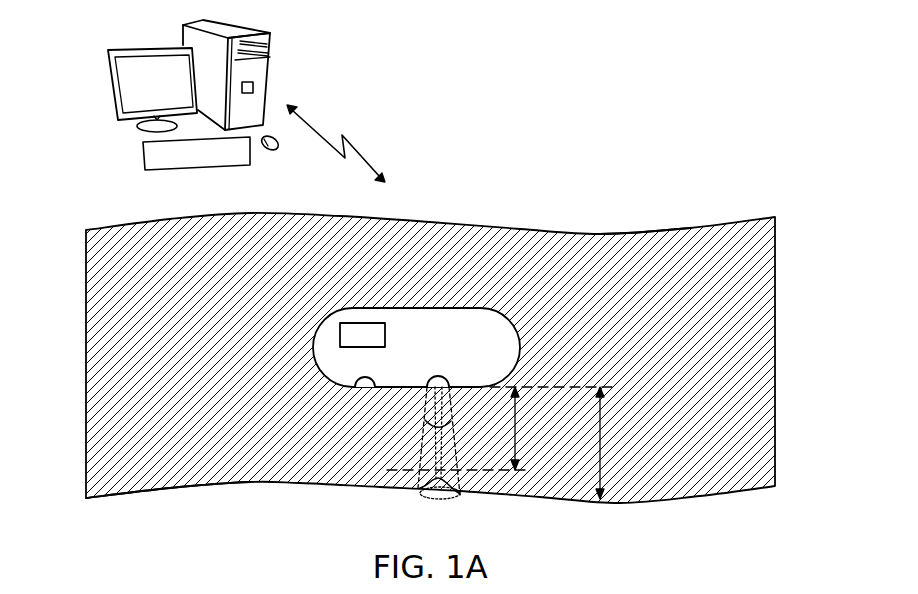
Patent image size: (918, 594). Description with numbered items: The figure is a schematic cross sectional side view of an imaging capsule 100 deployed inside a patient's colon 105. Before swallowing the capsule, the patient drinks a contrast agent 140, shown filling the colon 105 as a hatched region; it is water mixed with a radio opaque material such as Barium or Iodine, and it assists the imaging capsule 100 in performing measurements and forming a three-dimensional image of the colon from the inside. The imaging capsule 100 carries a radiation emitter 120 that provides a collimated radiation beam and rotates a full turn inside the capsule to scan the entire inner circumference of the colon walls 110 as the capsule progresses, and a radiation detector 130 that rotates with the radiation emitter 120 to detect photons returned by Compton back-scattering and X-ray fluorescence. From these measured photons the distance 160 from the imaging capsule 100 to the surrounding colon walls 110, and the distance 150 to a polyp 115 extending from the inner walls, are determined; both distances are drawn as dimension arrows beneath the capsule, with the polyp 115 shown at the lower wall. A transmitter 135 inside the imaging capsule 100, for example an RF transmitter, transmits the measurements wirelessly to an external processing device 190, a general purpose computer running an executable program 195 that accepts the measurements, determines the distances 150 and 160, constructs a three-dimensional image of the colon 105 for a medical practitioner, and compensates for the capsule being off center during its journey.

The imaging capsule 100 is at (316, 353).
The colon 105 is at (742, 197).
The colon walls 110 is at (650, 233).
The polyps 115 is at (450, 496).
The radiation emitter 120 is at (443, 377).
The radiation detector 130 is at (367, 390).
The transmitter 135 is at (365, 323).
The contrast agent 140 is at (658, 316).
The distance to polyps 150 is at (517, 431).
The distance to colon walls 160 is at (602, 463).
The processing device 190 is at (111, 80).
The executable program 195 is at (253, 86).